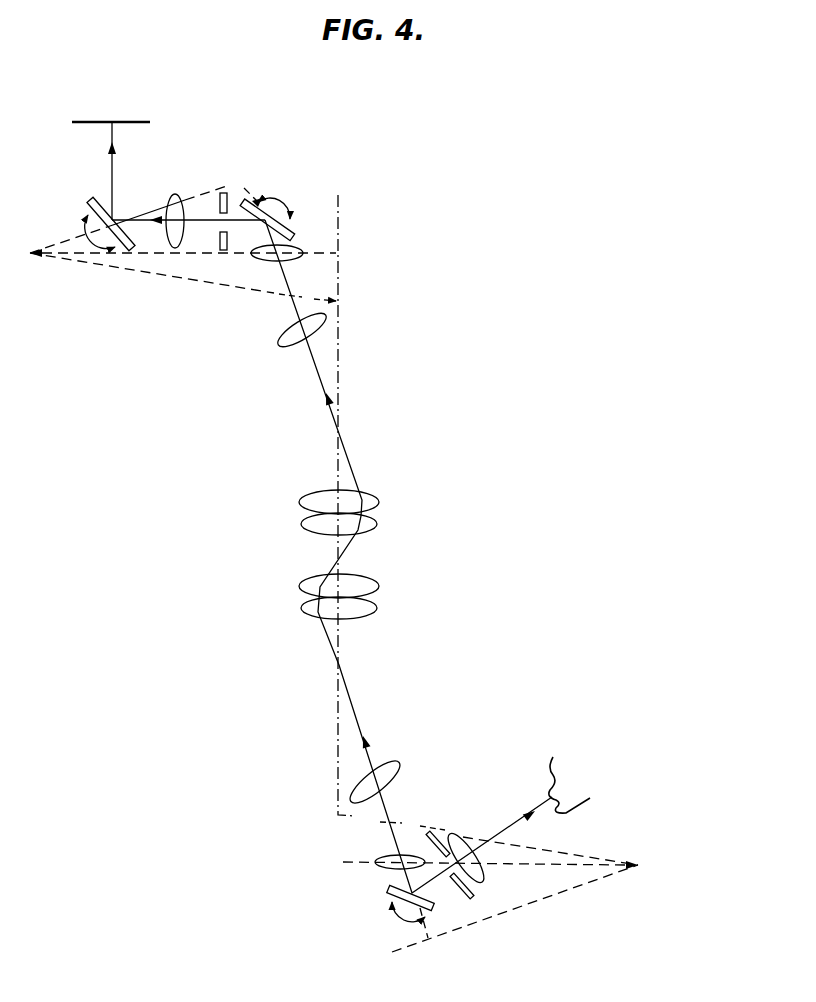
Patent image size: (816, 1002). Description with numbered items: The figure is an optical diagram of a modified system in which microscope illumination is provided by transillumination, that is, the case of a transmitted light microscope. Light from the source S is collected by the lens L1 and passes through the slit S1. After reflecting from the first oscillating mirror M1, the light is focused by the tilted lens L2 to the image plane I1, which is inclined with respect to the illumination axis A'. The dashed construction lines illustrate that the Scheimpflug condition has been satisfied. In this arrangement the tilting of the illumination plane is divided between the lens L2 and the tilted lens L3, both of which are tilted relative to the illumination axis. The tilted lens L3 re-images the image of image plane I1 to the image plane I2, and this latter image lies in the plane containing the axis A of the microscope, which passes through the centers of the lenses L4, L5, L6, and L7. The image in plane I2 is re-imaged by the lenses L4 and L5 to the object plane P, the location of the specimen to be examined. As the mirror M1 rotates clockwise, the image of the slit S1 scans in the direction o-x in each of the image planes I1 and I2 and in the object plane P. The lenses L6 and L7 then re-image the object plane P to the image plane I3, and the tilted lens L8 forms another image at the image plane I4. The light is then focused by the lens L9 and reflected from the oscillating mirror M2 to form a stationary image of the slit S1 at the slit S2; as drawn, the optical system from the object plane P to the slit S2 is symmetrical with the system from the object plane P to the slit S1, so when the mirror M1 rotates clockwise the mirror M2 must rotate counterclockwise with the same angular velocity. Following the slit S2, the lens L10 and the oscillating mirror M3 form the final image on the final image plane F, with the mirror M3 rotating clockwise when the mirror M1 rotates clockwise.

The final image plane F is at (130, 126).
The oscillating mirror M3 is at (98, 198).
The lens L10 is at (176, 195).
The slit S2 is at (236, 187).
The oscillating mirror M2 is at (292, 228).
The lens L9 is at (302, 250).
The image plane I4 is at (271, 300).
The tilted lens L8 is at (286, 337).
The image plane I3 is at (343, 437).
The lens L7 is at (372, 497).
The lens L6 is at (374, 524).
The object plane P is at (345, 561).
The lens L5 is at (372, 587).
The lens L4 is at (372, 612).
The image plane I2 is at (344, 665).
The axis of the microscope A is at (323, 505).
The illumination axis A' is at (408, 556).
The tilted lens L3 is at (396, 770).
The light source S is at (569, 774).
The image plane I1 is at (412, 822).
The lens L1 is at (454, 838).
The tilted lens L2 is at (386, 851).
The first oscillating mirror M1 is at (389, 889).
The slit S1 is at (450, 877).